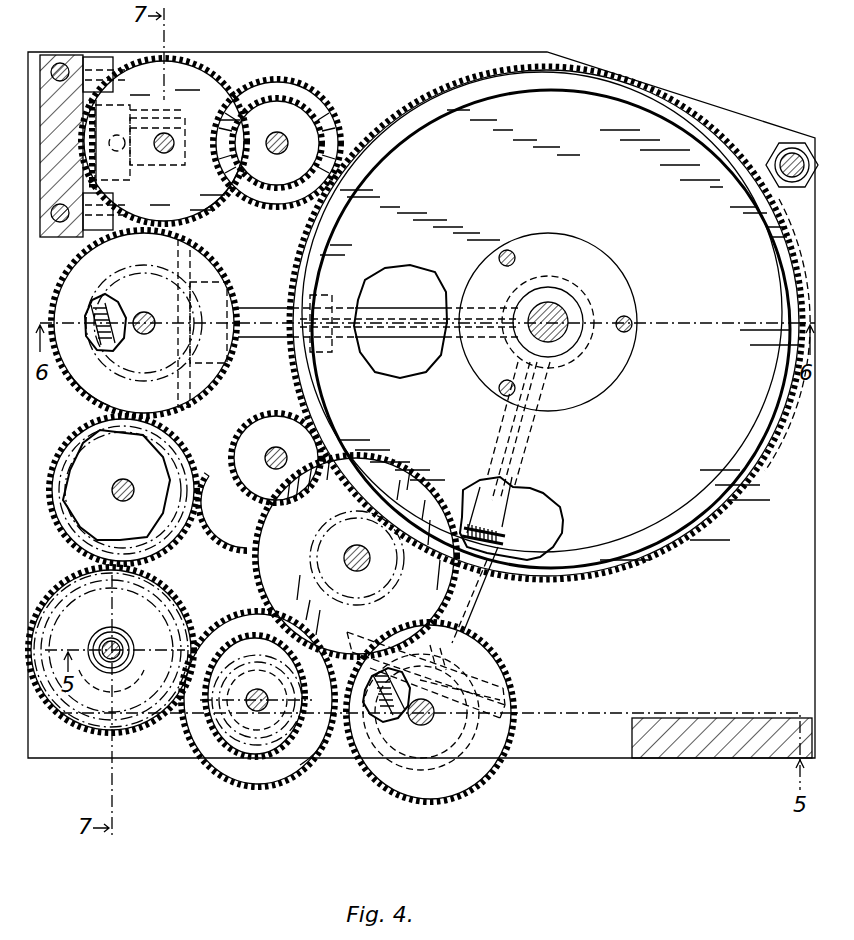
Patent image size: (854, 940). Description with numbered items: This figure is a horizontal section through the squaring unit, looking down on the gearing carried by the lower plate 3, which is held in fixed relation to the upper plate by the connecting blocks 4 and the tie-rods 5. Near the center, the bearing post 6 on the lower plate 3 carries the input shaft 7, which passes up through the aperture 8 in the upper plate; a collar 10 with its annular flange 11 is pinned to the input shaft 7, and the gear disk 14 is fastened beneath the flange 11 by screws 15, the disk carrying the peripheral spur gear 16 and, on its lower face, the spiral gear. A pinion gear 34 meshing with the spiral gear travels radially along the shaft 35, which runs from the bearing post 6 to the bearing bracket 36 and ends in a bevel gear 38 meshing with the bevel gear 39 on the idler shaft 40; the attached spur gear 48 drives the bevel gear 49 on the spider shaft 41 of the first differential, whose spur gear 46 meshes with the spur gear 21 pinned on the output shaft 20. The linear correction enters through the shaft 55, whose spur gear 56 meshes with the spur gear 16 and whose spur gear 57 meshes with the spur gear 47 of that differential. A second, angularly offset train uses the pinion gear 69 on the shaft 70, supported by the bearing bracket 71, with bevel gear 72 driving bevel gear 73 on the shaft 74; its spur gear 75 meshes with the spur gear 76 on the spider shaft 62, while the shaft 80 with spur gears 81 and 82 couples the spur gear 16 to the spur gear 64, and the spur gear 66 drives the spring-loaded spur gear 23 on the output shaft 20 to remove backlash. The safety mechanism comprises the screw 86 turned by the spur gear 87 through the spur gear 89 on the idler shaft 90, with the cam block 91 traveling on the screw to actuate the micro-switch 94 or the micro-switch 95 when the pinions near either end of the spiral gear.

The lower plate 3 is at (753, 118).
The connecting blocks 4 is at (55, 54).
The tie-rods 5 is at (795, 140).
The bearing post 6 is at (597, 363).
The input shaft 7 is at (560, 320).
The aperture 8 is at (330, 98).
The collar 10 is at (570, 300).
The annular flange 11 is at (604, 260).
The gear disk 14 is at (610, 570).
The screws 15 is at (517, 258).
The spur gear 16 is at (395, 108).
The output shaft 20 is at (117, 647).
The spur gear 21 is at (52, 723).
The spur gear 23 is at (100, 668).
The pinion gear 34 is at (373, 372).
The shaft 35 is at (258, 307).
The bearing bracket 36 is at (240, 285).
The bevel gear 38 is at (207, 262).
The bevel gear 39 is at (108, 300).
The idler shaft 40 is at (146, 334).
The spider shaft 41 is at (120, 497).
The spur gear 46 is at (55, 448).
The spur gear 47 is at (58, 535).
The spur gear 48 is at (63, 280).
The bevel gear 49 is at (85, 410).
The shaft 55 is at (280, 447).
The spur gear 56 is at (238, 427).
The spur gear 57 is at (240, 546).
The spider shaft 62 is at (258, 706).
The spur gear 64 is at (236, 678).
The spur gear 66 is at (245, 793).
The pinion gear 69 is at (515, 540).
The shaft 70 is at (525, 458).
The bearing bracket 71 is at (500, 660).
The bevel gear 72 is at (512, 690).
The bevel gear 73 is at (465, 728).
The shaft 74 is at (410, 722).
The spur gear 75 is at (463, 797).
The spur gear 76 is at (283, 767).
The shaft 80 is at (358, 574).
The spur gear 81 is at (328, 607).
The spur gear 82 is at (443, 480).
The screw 86 is at (167, 140).
The spur gear 87 is at (203, 68).
The spur gear 89 is at (238, 178).
The idler shaft 90 is at (278, 136).
The cam block 91 is at (200, 130).
The micro-switch 94 is at (113, 232).
The micro-switch 95 is at (103, 57).